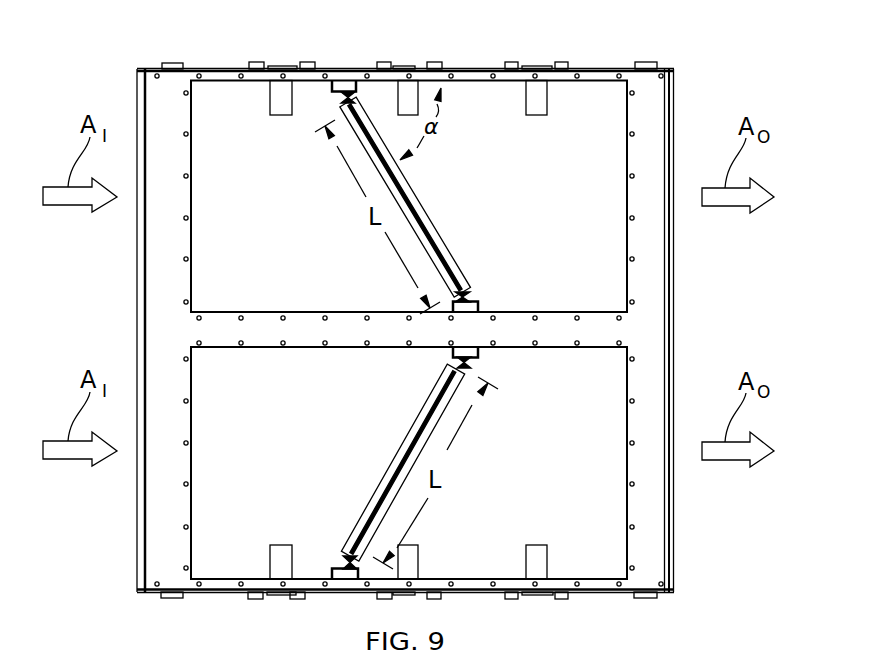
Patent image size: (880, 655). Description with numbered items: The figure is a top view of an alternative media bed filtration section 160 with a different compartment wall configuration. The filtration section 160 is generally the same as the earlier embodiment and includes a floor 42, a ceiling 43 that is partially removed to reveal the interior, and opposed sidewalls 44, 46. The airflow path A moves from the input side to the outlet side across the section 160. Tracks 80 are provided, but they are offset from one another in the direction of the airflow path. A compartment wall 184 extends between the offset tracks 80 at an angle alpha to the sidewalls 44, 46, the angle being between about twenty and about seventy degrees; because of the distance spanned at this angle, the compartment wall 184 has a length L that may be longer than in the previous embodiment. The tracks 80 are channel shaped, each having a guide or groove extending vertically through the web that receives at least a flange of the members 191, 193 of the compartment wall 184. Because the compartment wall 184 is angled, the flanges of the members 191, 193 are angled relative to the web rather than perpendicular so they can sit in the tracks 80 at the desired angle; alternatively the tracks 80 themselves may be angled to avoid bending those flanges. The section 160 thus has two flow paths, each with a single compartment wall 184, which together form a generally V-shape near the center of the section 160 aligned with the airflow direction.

The filtration section 160 is at (706, 43).
The sidewall 44 is at (600, 70).
The sidewall 46 is at (600, 593).
The ceiling 43 is at (649, 332).
The floor 42 is at (268, 258).
The track 80 is at (305, 103).
The compartment wall 184 is at (461, 183).
The member 191 is at (316, 112).
The member 193 is at (497, 280).